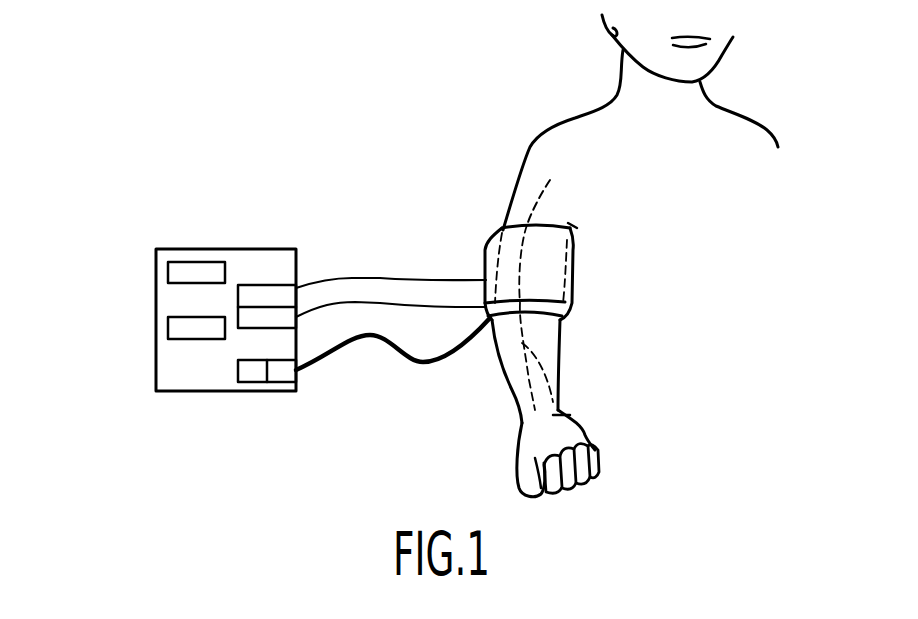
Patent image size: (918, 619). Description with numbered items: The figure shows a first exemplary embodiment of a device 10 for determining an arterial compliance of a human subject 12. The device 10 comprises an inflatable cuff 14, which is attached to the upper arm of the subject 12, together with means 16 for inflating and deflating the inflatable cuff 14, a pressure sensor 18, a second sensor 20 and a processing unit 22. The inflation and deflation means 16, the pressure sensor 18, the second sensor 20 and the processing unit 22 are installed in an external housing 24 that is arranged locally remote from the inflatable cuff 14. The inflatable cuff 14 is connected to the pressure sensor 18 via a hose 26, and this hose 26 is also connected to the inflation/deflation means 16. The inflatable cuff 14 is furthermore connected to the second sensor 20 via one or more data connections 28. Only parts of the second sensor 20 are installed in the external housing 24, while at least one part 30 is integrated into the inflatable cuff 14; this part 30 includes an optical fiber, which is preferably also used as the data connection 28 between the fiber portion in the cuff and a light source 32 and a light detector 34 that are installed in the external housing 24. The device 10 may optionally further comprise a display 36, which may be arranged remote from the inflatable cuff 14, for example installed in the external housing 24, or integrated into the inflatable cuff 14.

The device 10 is at (190, 96).
The subject 12 is at (588, 132).
The inflatable cuff 14 is at (557, 225).
The means for inflating and deflating the inflatable cuff 16 is at (248, 372).
The pressure sensor 18 is at (287, 372).
The second sensor 20 is at (272, 264).
The processing unit 22 is at (178, 328).
The external housing 24 is at (180, 393).
The hose 26 is at (370, 337).
The data connection 28 is at (415, 309).
The part of the second sensor 30 is at (573, 255).
The light source 32 is at (250, 295).
The light detector 34 is at (278, 317).
The display 36 is at (193, 270).